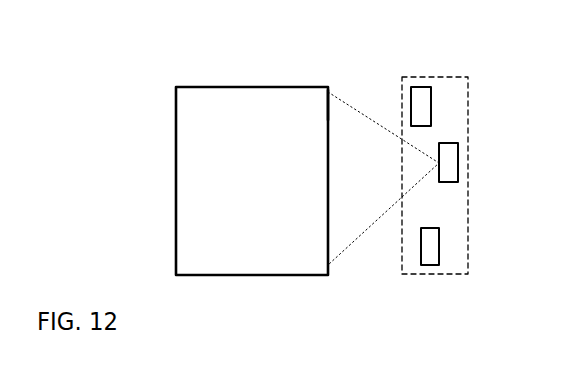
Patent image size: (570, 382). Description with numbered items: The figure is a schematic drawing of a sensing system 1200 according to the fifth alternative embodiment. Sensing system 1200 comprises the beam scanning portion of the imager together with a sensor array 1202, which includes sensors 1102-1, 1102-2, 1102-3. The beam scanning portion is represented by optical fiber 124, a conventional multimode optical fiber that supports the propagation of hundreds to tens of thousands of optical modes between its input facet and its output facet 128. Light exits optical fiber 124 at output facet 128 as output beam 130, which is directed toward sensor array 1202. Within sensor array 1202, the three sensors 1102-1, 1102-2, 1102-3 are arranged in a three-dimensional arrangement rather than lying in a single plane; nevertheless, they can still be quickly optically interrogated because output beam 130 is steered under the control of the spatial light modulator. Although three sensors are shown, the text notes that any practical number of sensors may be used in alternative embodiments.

The sensing system 1200 is at (131, 69).
The optical fiber 124 is at (252, 181).
The output facet 128 is at (328, 105).
The output beam 130 is at (358, 90).
The sensor array 1202 is at (450, 274).
The sensor 1102-1 is at (431, 95).
The sensor 1102-2 is at (458, 152).
The sensor 1102-3 is at (439, 238).